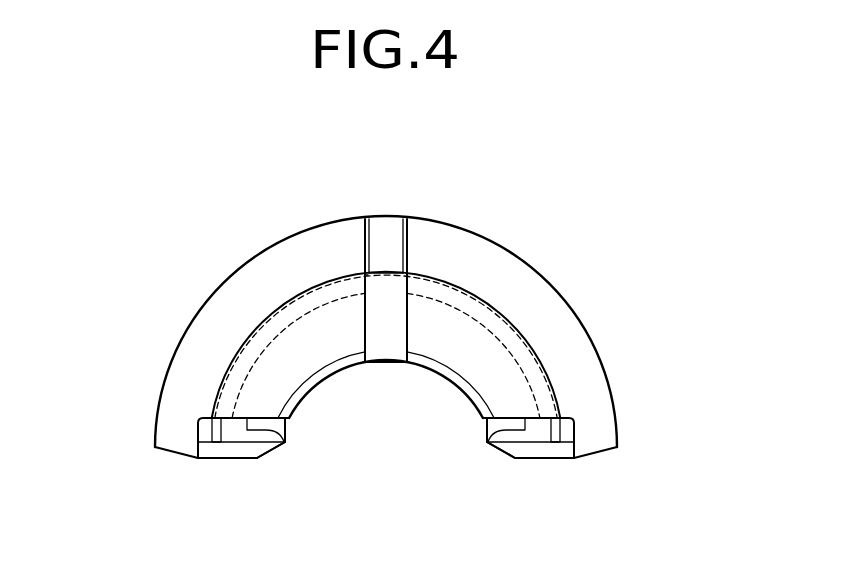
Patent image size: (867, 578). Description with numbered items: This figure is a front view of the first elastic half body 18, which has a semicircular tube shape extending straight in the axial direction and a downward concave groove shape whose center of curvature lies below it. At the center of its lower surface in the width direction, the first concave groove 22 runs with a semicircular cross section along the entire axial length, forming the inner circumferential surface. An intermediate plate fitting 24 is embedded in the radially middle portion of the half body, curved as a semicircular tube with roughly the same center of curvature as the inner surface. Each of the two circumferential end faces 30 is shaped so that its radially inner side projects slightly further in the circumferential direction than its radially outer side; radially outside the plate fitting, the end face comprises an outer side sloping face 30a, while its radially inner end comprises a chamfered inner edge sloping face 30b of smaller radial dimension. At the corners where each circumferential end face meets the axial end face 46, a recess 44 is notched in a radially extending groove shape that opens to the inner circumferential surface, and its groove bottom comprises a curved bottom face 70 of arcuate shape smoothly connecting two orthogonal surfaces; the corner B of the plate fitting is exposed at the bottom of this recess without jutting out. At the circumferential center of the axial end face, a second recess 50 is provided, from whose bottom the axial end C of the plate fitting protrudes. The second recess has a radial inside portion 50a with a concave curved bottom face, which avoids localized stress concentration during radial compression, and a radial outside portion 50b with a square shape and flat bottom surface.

The first elastic half body 18 is at (589, 214).
The first concave groove 22 is at (457, 383).
The thrust relief region 24 is at (475, 288).
The circumferential end face 30 is at (236, 459).
The outer side sloping face 30a is at (176, 458).
The inner edge sloping face 30b is at (276, 447).
The recess 44 is at (263, 463).
The axial end face 46 is at (277, 266).
The second recess 50 is at (380, 208).
The radial inside portion 50a is at (392, 333).
The radial outside portion 50b is at (388, 245).
The curved bottom face 70 is at (279, 434).
The corner B is at (214, 440).
The axial end C is at (380, 287).